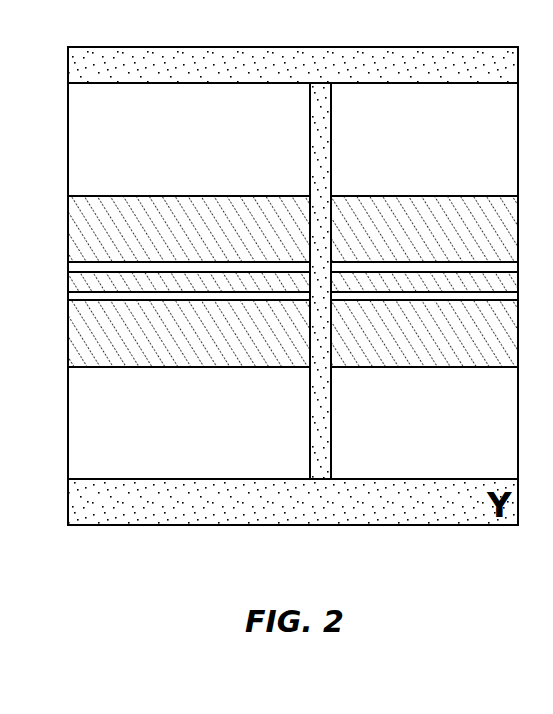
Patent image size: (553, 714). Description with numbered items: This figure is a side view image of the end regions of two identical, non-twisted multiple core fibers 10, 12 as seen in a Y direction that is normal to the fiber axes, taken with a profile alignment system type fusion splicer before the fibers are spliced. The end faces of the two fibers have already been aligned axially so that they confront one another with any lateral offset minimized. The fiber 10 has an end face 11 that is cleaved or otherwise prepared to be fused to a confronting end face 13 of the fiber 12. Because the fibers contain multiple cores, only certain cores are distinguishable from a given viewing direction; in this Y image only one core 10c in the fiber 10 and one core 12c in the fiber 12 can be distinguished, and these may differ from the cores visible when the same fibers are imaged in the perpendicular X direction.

The multiple core fiber 10 is at (263, 368).
The core 10c is at (187, 273).
The multiple core fiber 12 is at (508, 368).
The core 12c is at (399, 273).
The end face 11 is at (302, 236).
The end face 13 is at (335, 345).